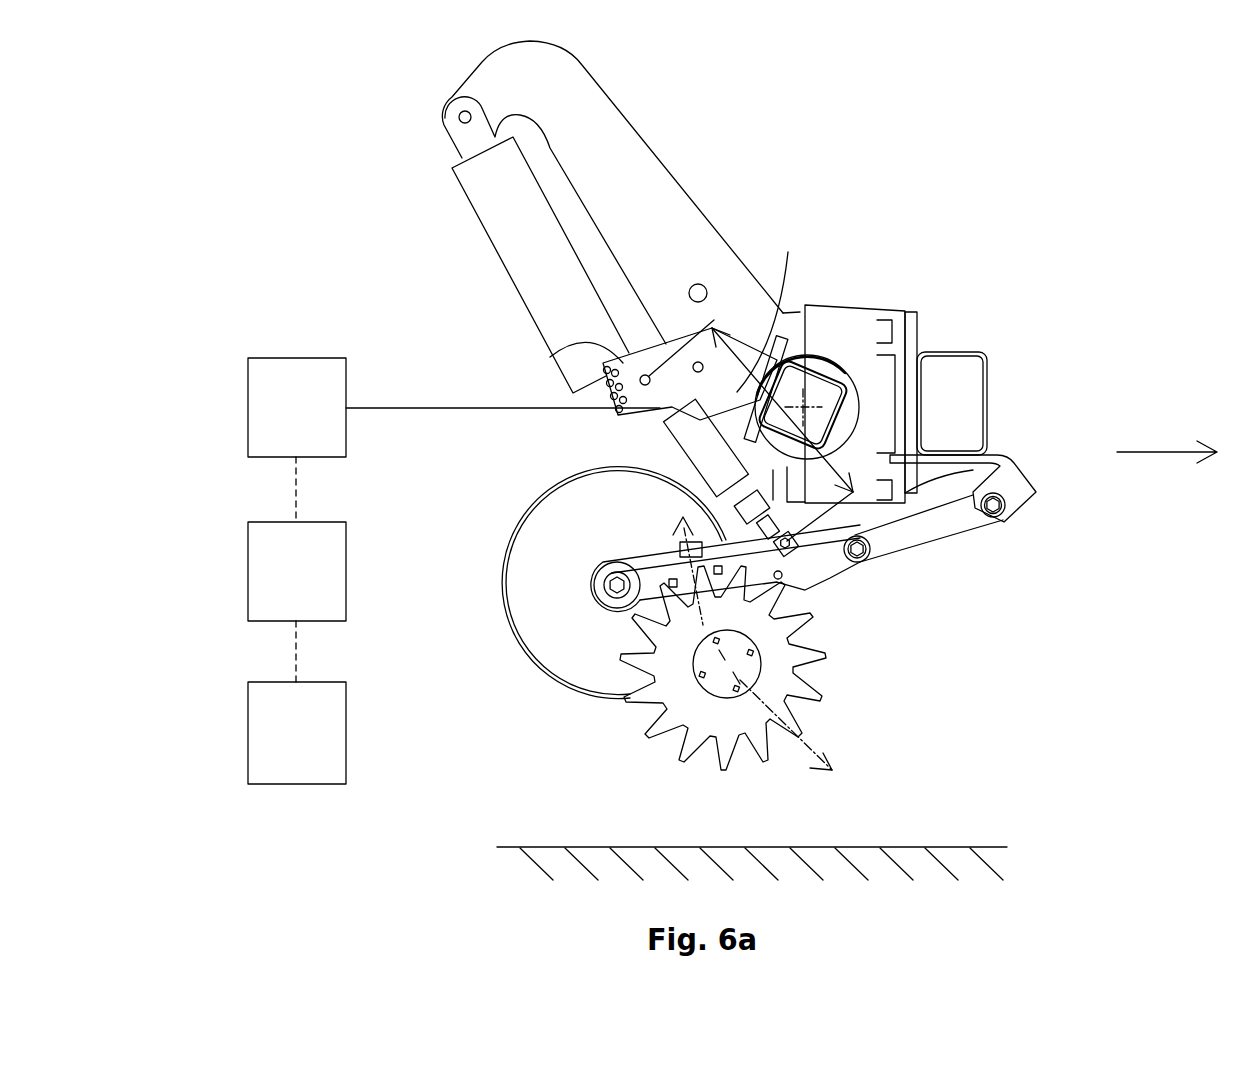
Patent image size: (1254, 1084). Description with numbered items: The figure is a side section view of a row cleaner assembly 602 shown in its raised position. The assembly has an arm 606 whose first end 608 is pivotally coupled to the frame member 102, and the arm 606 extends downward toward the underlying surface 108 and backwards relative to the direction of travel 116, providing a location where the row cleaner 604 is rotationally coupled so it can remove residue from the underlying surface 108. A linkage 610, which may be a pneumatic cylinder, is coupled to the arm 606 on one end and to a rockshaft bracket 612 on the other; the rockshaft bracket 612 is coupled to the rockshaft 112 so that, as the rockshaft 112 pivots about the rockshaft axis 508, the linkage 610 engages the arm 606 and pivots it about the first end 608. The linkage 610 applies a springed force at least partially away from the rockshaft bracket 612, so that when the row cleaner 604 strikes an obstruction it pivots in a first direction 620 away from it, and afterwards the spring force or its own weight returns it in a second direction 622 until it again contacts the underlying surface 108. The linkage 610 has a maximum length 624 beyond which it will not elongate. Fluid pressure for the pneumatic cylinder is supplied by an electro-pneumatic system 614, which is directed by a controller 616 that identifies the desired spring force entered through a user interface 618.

The row cleaner assembly 602 is at (953, 177).
The maximum length 624 is at (776, 336).
The rockshaft axis 508 is at (805, 405).
The rockshaft 112 is at (862, 400).
The frame member 102 is at (987, 405).
The direction of travel 116 is at (1165, 450).
The first end 608 is at (1003, 510).
The arm 606 is at (935, 527).
The linkage 610 is at (668, 455).
The rockshaft bracket 612 is at (623, 363).
The row cleaner 604 is at (800, 630).
The first direction 620 is at (703, 623).
The second direction 622 is at (840, 748).
The electro-pneumatic system 614 is at (292, 358).
The controller 616 is at (248, 572).
The user interface 618 is at (248, 738).
The underlying surface 108 is at (962, 847).